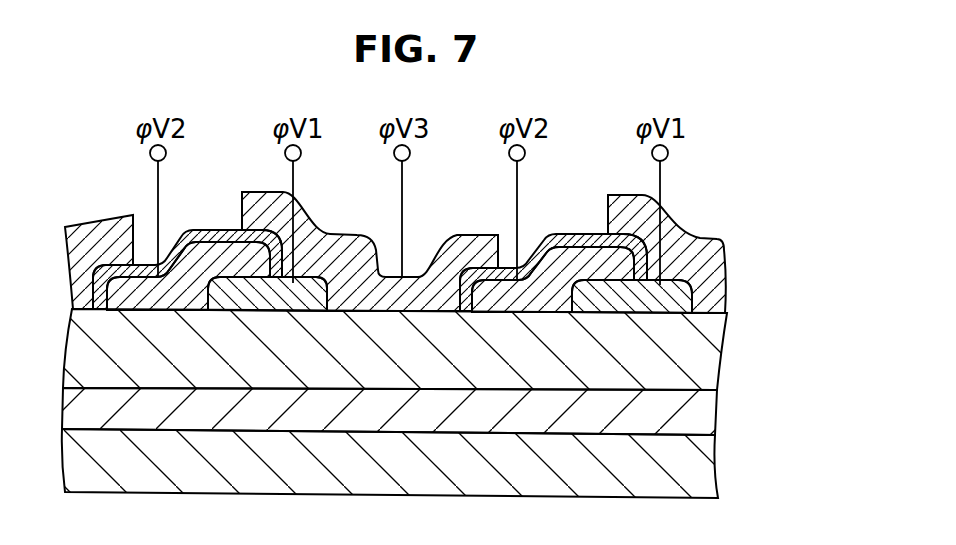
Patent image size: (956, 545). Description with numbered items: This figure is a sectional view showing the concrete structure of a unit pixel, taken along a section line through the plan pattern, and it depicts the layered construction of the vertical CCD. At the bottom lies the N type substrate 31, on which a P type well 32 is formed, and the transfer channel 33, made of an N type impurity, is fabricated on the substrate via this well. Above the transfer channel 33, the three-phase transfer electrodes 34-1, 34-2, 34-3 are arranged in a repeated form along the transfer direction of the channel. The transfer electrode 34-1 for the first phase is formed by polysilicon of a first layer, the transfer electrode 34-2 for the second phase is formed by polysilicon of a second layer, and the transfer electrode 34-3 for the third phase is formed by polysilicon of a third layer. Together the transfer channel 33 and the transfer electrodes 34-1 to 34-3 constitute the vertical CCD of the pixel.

The N type substrate 31 is at (703, 467).
The P type well 32 is at (703, 412).
The transfer channel 33 is at (703, 357).
The transfer electrode for the first phase 34-1 is at (302, 287).
The transfer electrode for the second phase 34-2 is at (217, 250).
The transfer electrode for the third phase 34-3 is at (475, 255).